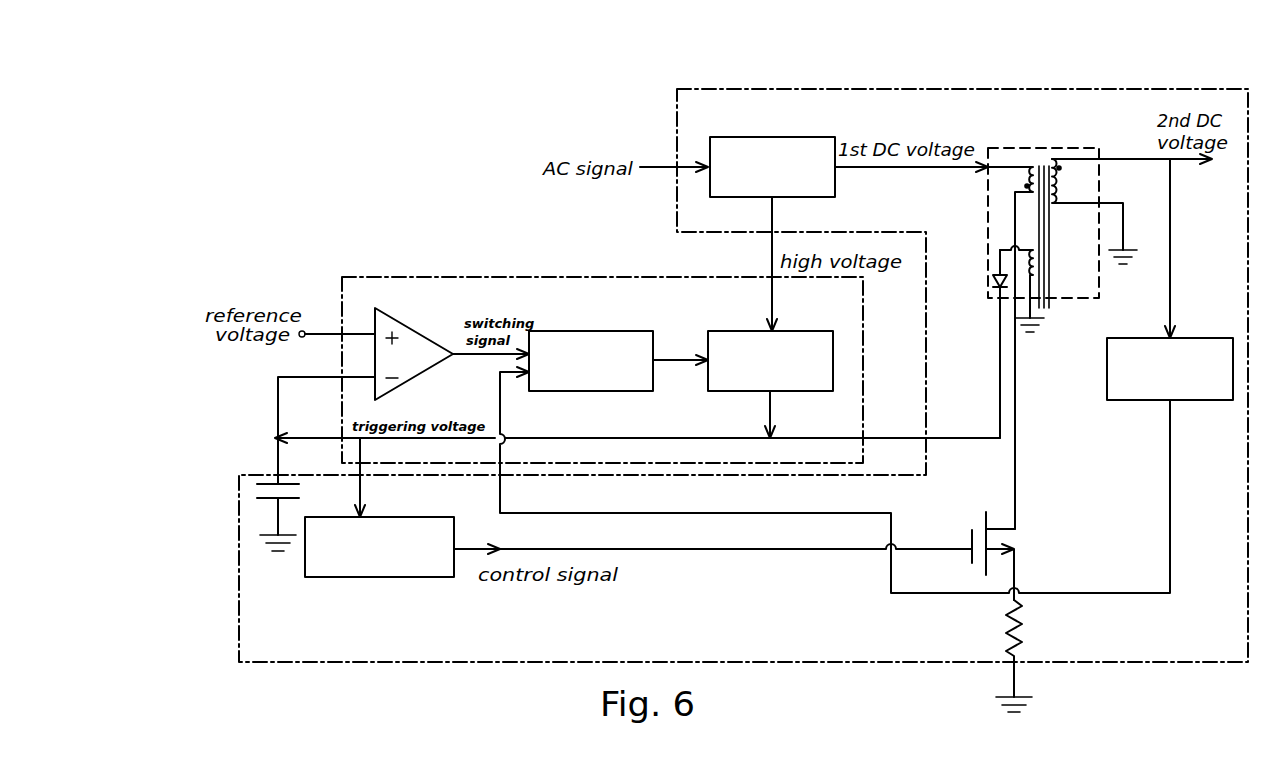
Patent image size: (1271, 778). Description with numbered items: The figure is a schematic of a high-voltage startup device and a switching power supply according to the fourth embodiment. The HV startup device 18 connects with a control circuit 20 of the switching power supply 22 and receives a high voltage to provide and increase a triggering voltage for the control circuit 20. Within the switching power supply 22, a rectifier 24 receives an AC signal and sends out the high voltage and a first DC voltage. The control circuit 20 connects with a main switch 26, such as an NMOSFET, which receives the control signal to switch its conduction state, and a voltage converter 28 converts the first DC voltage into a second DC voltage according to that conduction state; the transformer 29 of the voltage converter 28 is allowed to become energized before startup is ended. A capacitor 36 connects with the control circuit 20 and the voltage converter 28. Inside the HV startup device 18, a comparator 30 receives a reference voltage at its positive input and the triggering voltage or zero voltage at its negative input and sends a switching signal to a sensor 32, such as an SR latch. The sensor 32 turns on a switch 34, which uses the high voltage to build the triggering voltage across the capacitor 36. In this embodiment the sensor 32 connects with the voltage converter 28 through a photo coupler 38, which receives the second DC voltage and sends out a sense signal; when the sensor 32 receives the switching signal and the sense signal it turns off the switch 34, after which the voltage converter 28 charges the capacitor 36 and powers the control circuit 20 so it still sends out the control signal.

The HV startup device 18 is at (500, 277).
The control circuit 20 is at (365, 578).
The switching power supply 22 is at (945, 89).
The rectifier 24 is at (772, 137).
The main switch 26 is at (1015, 517).
The voltage converter 28 is at (1062, 293).
The transformer 29 is at (1064, 247).
The comparator 30 is at (392, 310).
The sensor 32 is at (594, 331).
The switch 34 is at (833, 362).
The capacitor 36 is at (268, 498).
The photo coupler 38 is at (1210, 400).